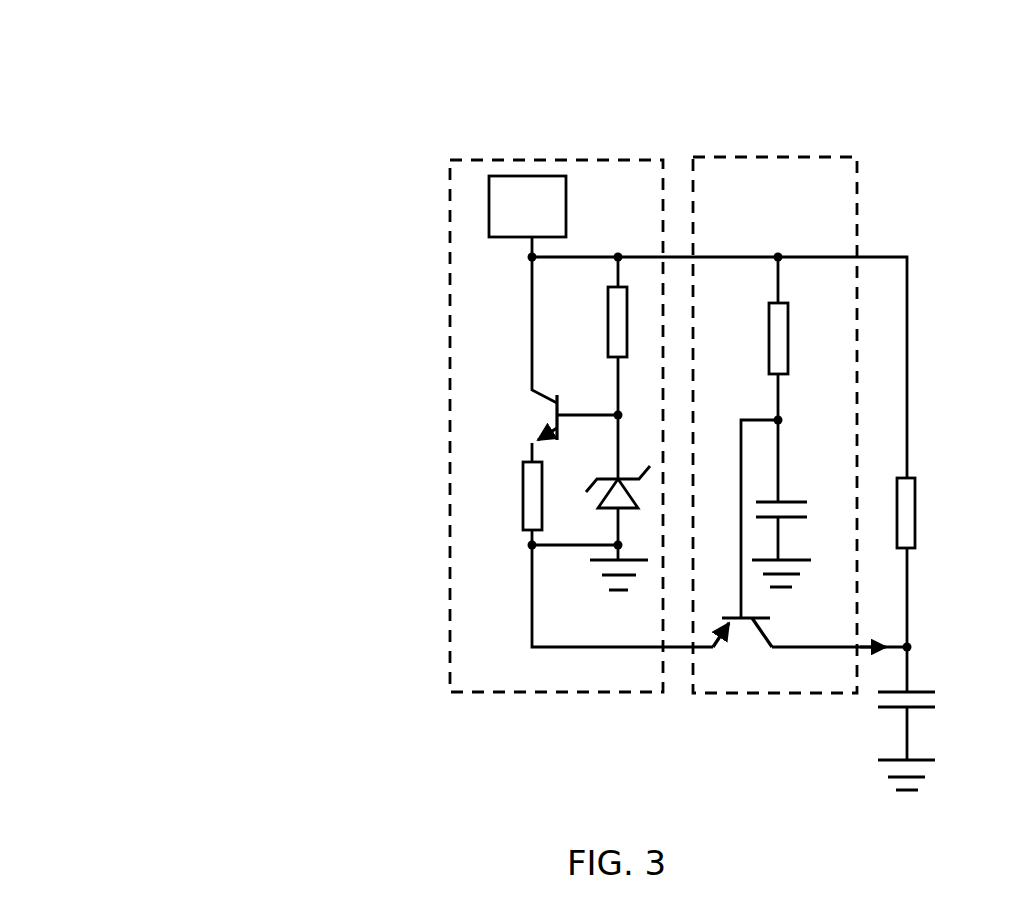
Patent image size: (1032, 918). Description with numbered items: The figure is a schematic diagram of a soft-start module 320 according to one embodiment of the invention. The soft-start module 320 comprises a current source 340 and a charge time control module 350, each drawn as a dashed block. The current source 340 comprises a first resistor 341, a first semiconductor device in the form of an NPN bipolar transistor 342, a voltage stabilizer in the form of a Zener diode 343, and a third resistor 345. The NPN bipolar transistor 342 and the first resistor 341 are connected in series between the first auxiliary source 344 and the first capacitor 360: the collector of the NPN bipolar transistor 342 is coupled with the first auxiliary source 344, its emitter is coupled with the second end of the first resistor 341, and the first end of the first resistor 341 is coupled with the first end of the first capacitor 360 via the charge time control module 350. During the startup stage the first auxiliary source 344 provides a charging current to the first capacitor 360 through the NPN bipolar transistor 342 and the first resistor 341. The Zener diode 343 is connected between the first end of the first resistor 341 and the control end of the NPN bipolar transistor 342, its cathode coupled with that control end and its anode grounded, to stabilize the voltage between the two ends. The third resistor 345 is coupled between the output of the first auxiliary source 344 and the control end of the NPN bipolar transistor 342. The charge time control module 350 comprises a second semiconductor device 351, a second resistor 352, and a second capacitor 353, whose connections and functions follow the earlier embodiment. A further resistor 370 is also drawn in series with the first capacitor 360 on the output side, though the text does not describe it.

The soft-start module 320 is at (330, 124).
The current source 340 is at (530, 692).
The first resistor 341 is at (505, 496).
The NPN bipolar transistor 342 is at (515, 417).
The Zener diode 343 is at (606, 475).
The first auxiliary source 344 is at (528, 175).
The third resistor 345 is at (590, 322).
The charge time control module 350 is at (780, 693).
The second semiconductor device 351 is at (740, 662).
The second resistor 352 is at (808, 338).
The second capacitor 353 is at (798, 490).
The first capacitor 360 is at (938, 703).
The resistor 370 is at (935, 513).